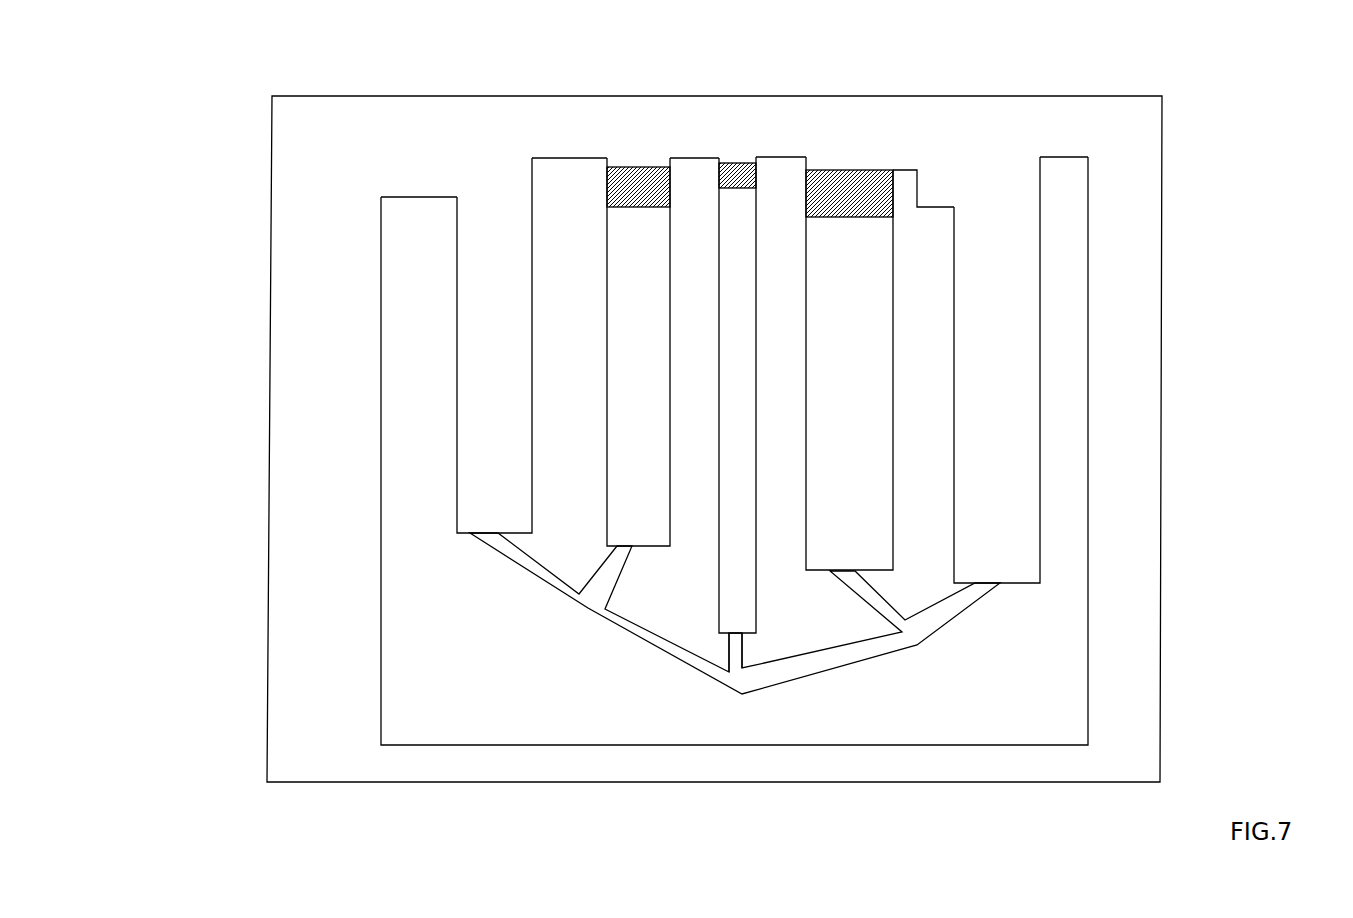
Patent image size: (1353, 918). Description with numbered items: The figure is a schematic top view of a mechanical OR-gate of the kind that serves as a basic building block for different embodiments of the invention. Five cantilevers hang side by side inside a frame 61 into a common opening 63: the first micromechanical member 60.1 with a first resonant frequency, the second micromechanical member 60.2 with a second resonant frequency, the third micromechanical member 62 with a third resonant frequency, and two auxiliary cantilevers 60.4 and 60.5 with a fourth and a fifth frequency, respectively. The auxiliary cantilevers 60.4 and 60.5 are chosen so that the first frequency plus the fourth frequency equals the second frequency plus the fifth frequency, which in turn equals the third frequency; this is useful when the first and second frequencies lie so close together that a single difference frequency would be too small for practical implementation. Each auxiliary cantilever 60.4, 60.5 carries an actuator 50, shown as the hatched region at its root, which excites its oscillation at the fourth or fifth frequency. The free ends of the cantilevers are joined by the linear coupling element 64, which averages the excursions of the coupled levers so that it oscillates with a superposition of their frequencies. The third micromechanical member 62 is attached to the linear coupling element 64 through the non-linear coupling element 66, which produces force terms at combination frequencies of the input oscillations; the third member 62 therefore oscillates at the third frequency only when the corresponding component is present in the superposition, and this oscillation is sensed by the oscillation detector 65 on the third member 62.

The frame 61 is at (1132, 530).
The cavity opening 63 is at (465, 618).
The first micromechanical member 60.1 is at (1012, 370).
The second micromechanical member 60.2 is at (473, 302).
The auxiliary cantilever 60.4 is at (861, 342).
The auxiliary cantilever 60.5 is at (625, 238).
The third micromechanical member 62 is at (735, 242).
The actuator 50 is at (633, 167).
The oscillation detector 65 is at (742, 160).
The linear coupling element 64 is at (528, 565).
The non-linear coupling element 66 is at (735, 648).